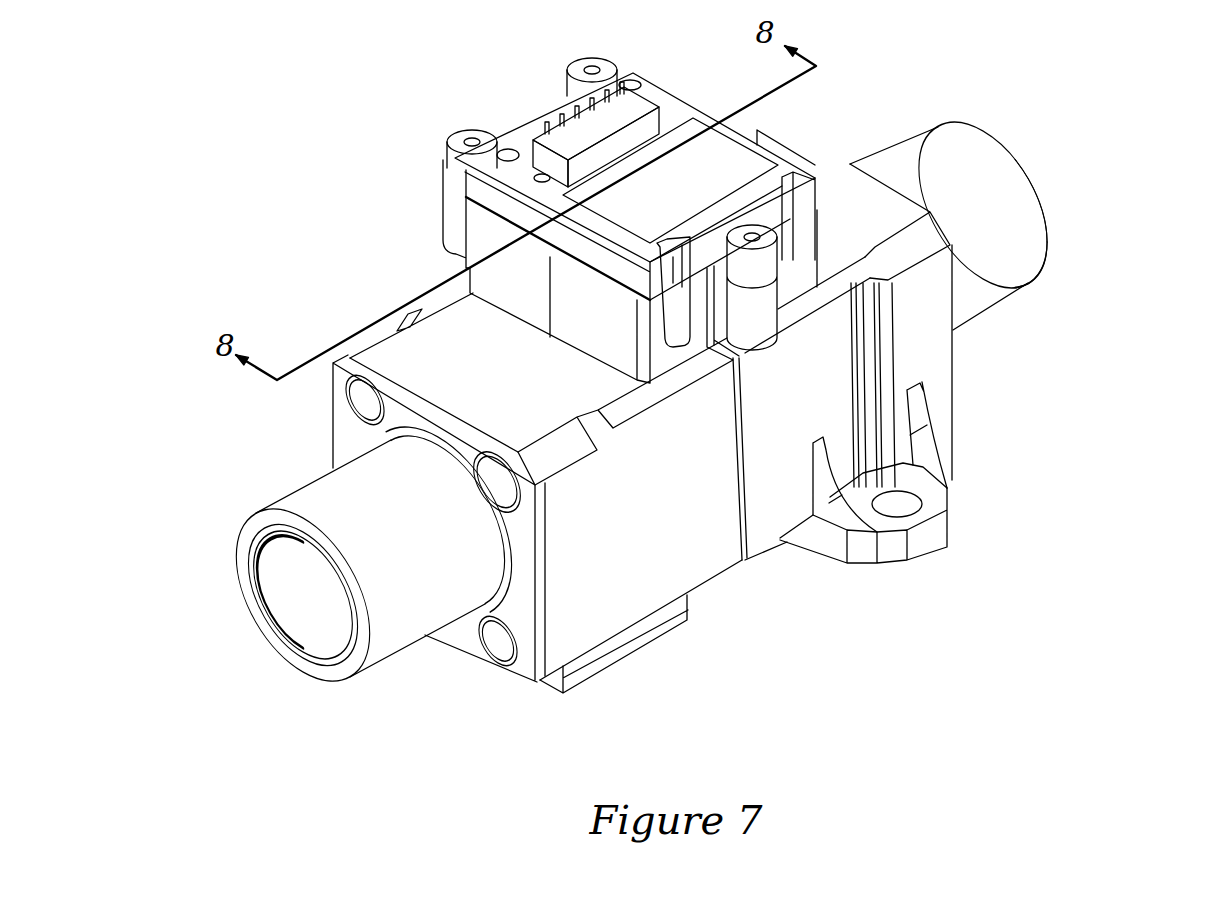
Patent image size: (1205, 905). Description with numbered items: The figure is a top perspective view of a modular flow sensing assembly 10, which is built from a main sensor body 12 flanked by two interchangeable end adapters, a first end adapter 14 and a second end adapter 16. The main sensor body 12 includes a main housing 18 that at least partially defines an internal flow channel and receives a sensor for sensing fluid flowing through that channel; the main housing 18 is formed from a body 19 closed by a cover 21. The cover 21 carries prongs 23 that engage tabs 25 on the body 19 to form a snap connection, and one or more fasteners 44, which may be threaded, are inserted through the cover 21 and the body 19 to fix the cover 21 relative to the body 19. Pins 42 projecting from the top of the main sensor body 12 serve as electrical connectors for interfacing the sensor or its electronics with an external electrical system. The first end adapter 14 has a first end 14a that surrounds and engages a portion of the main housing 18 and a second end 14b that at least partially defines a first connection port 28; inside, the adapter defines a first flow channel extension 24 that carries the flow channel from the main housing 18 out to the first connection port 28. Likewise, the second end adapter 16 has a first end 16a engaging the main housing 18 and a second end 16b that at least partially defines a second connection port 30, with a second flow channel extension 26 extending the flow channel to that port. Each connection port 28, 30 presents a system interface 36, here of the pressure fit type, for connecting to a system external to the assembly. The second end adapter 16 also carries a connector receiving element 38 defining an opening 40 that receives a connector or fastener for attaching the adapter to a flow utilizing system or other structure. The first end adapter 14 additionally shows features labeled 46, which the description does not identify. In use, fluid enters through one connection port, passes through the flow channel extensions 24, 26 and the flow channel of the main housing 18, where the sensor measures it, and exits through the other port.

The modular flow sensing assembly 10 is at (288, 137).
The main sensor body 12 is at (671, 74).
The first end adapter 14 is at (600, 628).
The first end of first end adapter 14a is at (724, 540).
The second end of first end adapter 14b is at (230, 572).
The second end adapter 16 is at (930, 356).
The first end of second end adapter 16a is at (763, 423).
The second end of second end adapter 16b is at (1057, 189).
The main housing 18 is at (477, 233).
The body 19 is at (818, 222).
The cover 21 is at (758, 146).
The prongs 23 is at (800, 252).
The first flow channel extension 24 is at (301, 636).
The tabs 25 is at (786, 272).
The second flow channel extension 26 is at (1024, 128).
The first connection port 28 is at (348, 690).
The second connection port 30 is at (1025, 285).
The system interface 36 is at (236, 616).
The connector receiving element 38 is at (935, 553).
The openings 40 is at (920, 490).
The pins 42 is at (562, 128).
The fasteners 44 is at (590, 68).
The fastener hole 46 is at (358, 400).